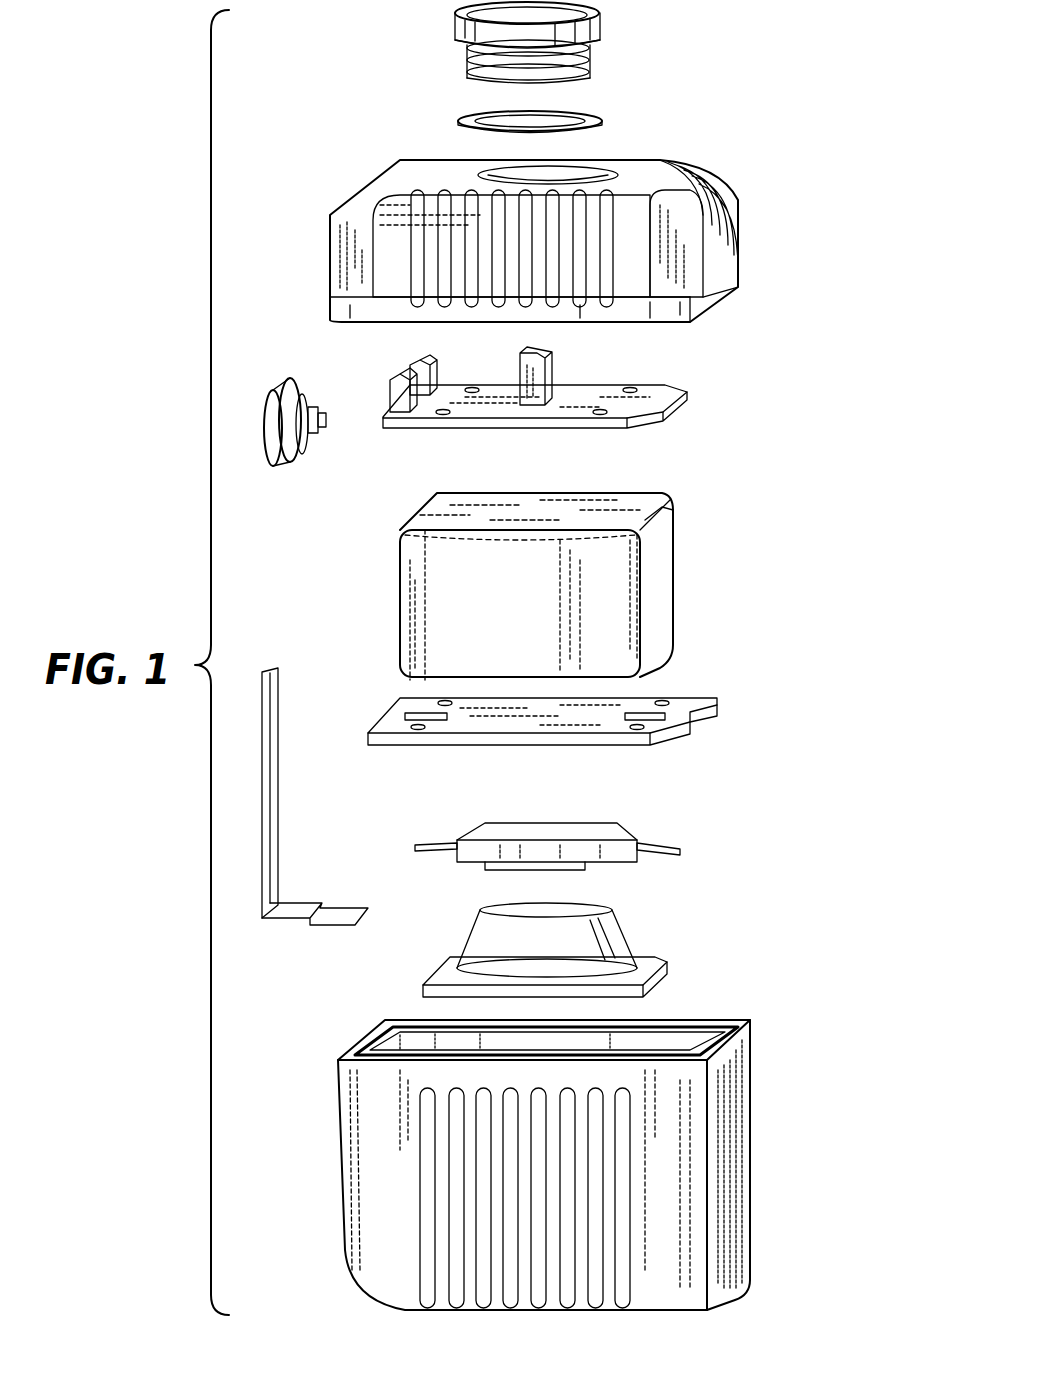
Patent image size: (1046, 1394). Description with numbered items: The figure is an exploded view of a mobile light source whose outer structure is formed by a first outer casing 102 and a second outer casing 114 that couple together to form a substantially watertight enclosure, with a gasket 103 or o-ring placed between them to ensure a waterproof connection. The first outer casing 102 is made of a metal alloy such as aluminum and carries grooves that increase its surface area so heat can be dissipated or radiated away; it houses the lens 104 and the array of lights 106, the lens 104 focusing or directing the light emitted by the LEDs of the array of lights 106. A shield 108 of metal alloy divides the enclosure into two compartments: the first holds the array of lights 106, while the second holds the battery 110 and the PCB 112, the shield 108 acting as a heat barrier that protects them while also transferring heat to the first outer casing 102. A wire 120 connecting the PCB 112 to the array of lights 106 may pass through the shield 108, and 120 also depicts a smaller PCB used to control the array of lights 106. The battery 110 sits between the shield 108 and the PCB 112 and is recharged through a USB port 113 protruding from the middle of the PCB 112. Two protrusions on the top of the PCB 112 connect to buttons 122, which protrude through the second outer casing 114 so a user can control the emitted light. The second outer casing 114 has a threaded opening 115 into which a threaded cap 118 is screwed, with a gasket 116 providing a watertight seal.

The first outer casing 102 is at (609, 1138).
The gasket 103 is at (750, 1022).
The lens 104 is at (668, 962).
The array of lights 106 is at (680, 851).
The shield 108 is at (718, 708).
The battery 110 is at (673, 558).
The PCB 112 is at (601, 376).
The USB port 113 is at (537, 372).
The second outer casing 114 is at (570, 215).
The opening 115 is at (608, 172).
The gasket 116 is at (603, 120).
The cap 118 is at (602, 28).
The wire 120 is at (277, 815).
The buttons 122 is at (318, 447).